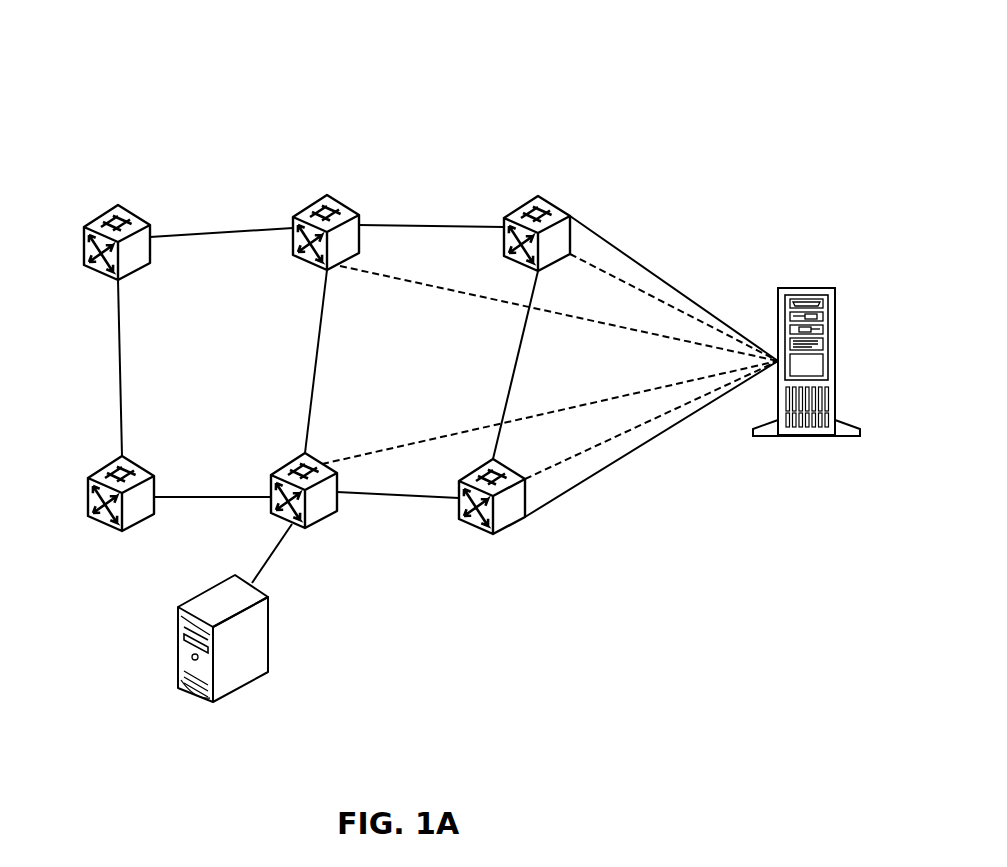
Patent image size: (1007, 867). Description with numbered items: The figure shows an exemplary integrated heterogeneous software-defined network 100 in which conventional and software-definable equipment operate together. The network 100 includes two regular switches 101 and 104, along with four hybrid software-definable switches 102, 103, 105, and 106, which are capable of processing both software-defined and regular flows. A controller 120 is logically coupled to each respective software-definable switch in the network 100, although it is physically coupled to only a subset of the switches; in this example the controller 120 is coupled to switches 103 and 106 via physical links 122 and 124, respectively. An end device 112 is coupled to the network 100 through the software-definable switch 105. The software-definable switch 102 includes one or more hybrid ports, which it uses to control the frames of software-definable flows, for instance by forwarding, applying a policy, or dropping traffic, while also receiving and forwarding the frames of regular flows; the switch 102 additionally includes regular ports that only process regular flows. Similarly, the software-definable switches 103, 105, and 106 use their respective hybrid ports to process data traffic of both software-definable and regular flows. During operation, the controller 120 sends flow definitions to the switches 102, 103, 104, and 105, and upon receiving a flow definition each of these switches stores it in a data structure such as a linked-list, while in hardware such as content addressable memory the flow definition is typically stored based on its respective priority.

The heterogeneous software-defined network 100 is at (687, 70).
The regular switch 101 is at (87, 264).
The hybrid software-definable switch 102 is at (294, 256).
The hybrid software-definable switch 103 is at (542, 206).
The regular switch 104 is at (91, 516).
The hybrid software-definable switch 105 is at (272, 515).
The hybrid software-definable switch 106 is at (466, 524).
The end device 112 is at (268, 655).
The controller 120 is at (835, 328).
The physical link 122 is at (660, 282).
The physical link 124 is at (613, 463).